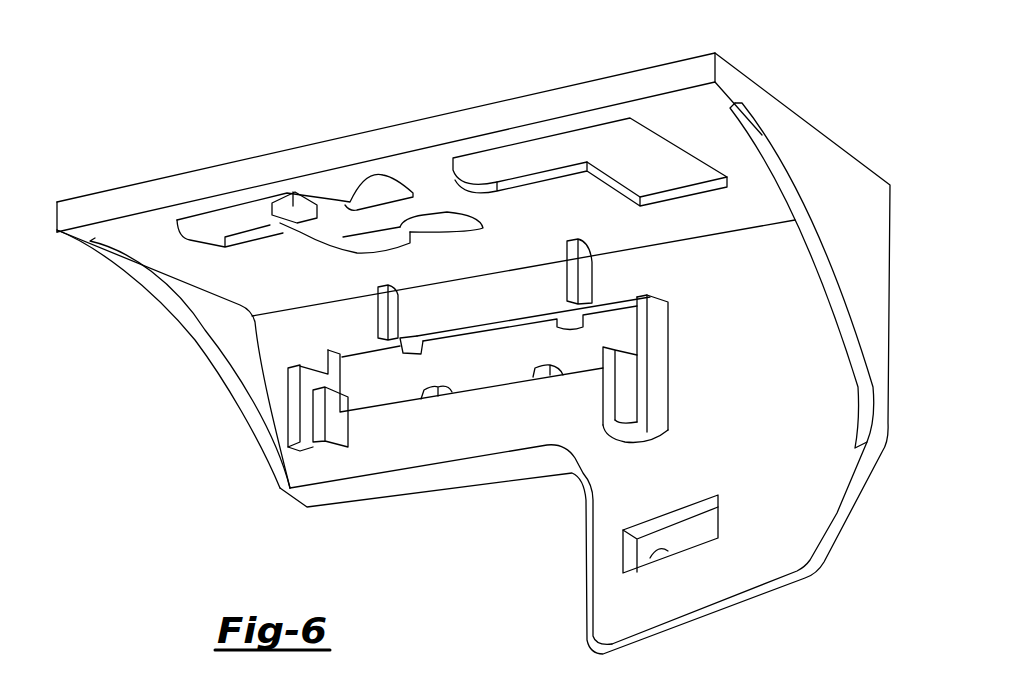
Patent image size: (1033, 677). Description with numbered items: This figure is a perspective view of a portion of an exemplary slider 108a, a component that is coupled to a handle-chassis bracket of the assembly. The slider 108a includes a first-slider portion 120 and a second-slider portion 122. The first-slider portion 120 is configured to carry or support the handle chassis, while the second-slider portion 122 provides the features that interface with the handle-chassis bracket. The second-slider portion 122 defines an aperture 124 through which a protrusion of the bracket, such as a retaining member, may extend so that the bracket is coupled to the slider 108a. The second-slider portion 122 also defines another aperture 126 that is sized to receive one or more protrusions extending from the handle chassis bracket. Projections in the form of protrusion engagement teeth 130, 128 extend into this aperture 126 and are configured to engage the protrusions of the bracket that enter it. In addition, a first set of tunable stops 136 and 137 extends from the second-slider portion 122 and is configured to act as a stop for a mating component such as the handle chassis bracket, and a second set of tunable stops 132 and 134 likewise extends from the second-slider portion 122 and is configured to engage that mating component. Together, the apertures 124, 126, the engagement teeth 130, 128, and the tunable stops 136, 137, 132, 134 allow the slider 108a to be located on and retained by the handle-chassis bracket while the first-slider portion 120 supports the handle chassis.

The slider 108a is at (794, 85).
The first-slider portion 120 is at (602, 92).
The second-slider portion 122 is at (843, 512).
The aperture 124 is at (668, 551).
The aperture 126 is at (469, 374).
The protrusion engagement teeth 128 is at (421, 390).
The protrusion engagement teeth 130 is at (537, 318).
The tunable stop 132 is at (292, 436).
The tunable stop 134 is at (641, 401).
The tunable stop 136 is at (378, 313).
The tunable stop 137 is at (571, 274).